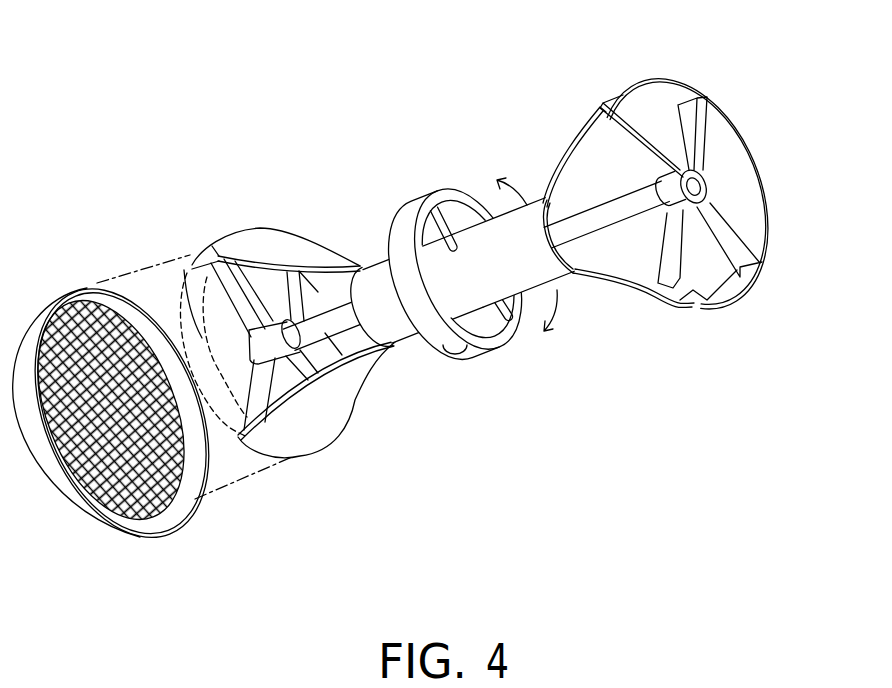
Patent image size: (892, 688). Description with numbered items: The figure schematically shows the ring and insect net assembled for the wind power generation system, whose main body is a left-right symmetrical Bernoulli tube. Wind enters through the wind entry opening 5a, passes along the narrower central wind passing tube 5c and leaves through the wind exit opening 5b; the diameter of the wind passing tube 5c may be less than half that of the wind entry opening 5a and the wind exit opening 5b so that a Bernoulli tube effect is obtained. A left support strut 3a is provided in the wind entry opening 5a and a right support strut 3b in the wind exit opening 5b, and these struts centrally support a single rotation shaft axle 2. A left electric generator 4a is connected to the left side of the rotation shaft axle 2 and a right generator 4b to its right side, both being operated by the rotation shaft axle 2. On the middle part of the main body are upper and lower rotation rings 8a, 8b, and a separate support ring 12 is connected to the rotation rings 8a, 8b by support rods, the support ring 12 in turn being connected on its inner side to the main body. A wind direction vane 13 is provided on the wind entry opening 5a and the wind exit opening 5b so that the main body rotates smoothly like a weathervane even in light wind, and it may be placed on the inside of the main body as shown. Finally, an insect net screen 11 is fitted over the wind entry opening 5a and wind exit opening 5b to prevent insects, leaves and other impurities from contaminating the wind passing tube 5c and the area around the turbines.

The rotation shaft axle 2 is at (608, 222).
The left support strut 3a is at (243, 278).
The right support strut 3b is at (727, 113).
The left electric generator 4a is at (181, 278).
The right generator 4b is at (699, 184).
The wind entry opening 5a is at (317, 362).
The wind exit opening 5b is at (720, 273).
The wind passing tube 5c is at (539, 226).
The upper rotation ring 8a is at (442, 208).
The lower rotation ring 8b is at (503, 317).
The insect net screen 11 is at (109, 517).
The support ring 12 is at (433, 334).
The wind direction vane 13 is at (276, 281).